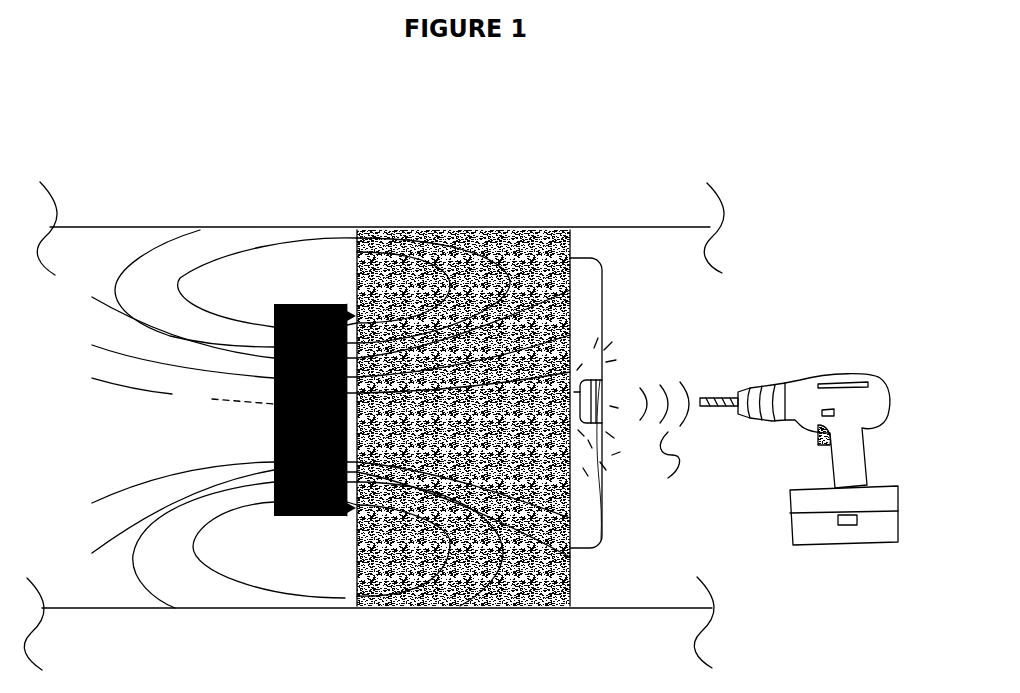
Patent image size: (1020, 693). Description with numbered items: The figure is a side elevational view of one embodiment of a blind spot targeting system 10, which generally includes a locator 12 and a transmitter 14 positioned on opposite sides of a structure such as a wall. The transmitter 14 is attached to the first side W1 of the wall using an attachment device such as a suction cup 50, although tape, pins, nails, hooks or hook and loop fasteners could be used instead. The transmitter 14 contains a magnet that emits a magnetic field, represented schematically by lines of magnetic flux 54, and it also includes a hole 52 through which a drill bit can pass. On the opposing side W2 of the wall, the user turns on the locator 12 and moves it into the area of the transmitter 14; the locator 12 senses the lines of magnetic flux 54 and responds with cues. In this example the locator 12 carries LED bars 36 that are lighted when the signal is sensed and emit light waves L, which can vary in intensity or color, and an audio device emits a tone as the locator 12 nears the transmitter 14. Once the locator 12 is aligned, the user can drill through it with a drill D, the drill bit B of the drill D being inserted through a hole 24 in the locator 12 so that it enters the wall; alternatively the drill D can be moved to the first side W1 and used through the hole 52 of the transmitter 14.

The blind spot targeting system 10 is at (622, 181).
The locator 12 is at (645, 310).
The transmitter 14 is at (250, 424).
The hole 24 is at (605, 397).
The light emitting diode (LED) bars 36 is at (591, 378).
The suction cup 50 is at (351, 314).
The hole 52 is at (224, 406).
The lines of magnetic flux 54 is at (160, 302).
The drill bit B is at (713, 396).
The drill D is at (803, 396).
The light waves L is at (606, 480).
The first side of the wall W1 is at (346, 544).
The opposing side of the wall W2 is at (572, 577).